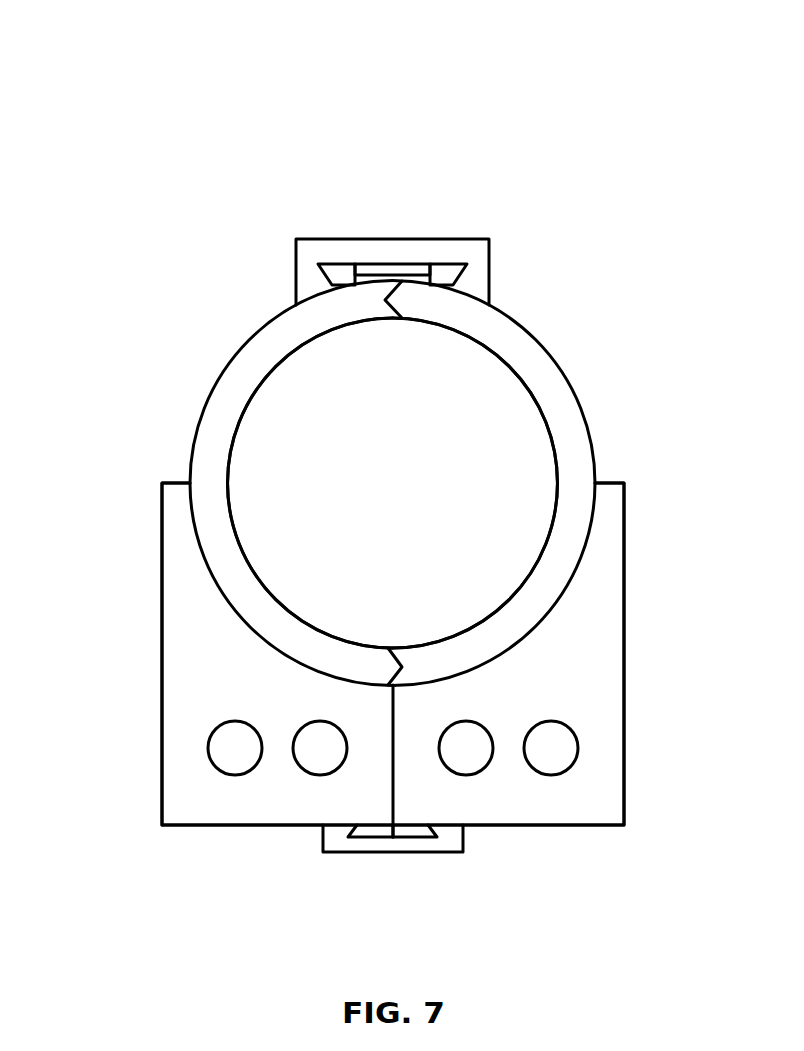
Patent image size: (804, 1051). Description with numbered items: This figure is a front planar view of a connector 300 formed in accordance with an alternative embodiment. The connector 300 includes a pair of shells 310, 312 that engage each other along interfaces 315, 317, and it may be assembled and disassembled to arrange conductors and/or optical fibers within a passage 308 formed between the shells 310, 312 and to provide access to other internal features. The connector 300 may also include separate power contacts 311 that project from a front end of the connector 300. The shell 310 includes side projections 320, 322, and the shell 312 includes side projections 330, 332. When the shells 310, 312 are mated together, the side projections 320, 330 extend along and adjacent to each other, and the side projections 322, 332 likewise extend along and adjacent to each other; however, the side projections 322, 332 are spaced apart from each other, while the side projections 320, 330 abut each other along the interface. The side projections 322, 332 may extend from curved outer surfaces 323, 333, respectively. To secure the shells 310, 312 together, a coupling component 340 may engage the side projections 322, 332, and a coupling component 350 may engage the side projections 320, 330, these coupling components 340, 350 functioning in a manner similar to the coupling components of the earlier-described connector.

The connector 300 is at (602, 110).
The passage 308 is at (467, 407).
The shell 310 is at (162, 575).
The power contacts 311 is at (570, 800).
The shell 312 is at (625, 632).
The interface 315 is at (402, 326).
The interface 317 is at (405, 731).
The side projection 320 is at (366, 838).
The side projection 322 is at (340, 263).
The curved outer surface 323 is at (228, 360).
The side projection 330 is at (432, 851).
The side projection 332 is at (450, 263).
The curved outer surface 333 is at (573, 390).
The coupling component 340 is at (393, 239).
The coupling component 350 is at (393, 848).